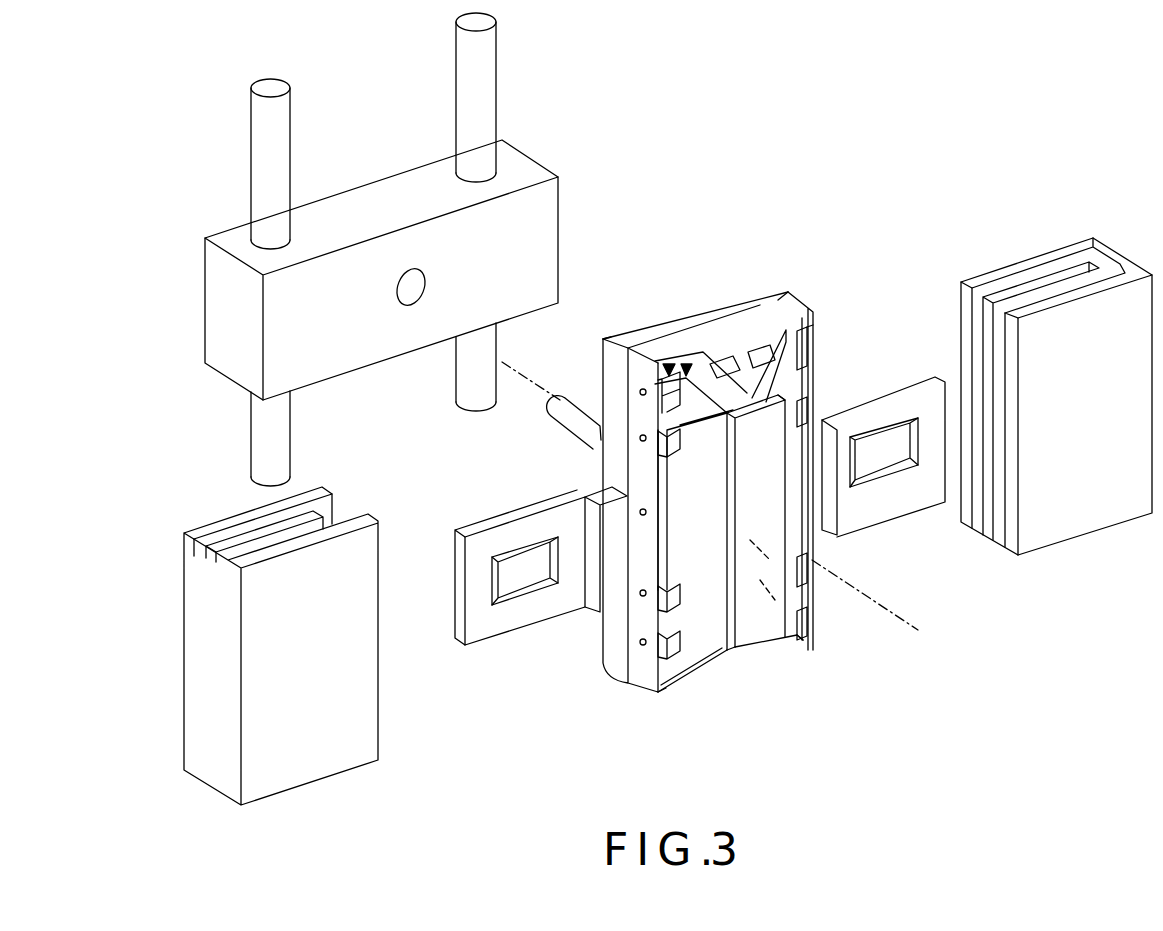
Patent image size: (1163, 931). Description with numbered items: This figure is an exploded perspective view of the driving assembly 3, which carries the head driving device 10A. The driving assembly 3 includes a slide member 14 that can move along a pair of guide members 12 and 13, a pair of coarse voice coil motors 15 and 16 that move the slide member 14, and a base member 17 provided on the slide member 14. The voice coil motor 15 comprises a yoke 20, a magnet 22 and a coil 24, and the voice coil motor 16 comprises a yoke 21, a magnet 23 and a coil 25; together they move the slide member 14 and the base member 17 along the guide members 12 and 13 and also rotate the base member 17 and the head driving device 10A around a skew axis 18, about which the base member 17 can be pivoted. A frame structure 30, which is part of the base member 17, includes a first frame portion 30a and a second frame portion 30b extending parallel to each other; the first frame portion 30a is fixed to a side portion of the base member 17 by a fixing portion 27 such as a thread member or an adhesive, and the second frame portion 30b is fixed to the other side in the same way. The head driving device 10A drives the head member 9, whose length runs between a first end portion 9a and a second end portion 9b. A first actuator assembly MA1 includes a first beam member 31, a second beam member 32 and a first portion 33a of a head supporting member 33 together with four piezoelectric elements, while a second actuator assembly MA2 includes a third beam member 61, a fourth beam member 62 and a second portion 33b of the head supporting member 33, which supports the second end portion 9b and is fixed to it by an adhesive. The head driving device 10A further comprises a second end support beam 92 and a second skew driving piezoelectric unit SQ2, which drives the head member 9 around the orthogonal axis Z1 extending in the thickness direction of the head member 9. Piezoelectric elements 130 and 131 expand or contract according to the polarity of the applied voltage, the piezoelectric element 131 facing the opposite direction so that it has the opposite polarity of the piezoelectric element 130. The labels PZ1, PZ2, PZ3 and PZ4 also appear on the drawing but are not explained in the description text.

The driving assembly 3 is at (1048, 140).
The head member 9 is at (750, 535).
The first end portion 9a is at (742, 662).
The second end portion 9b is at (812, 405).
The head driving device 10A is at (727, 479).
The guide member 12 is at (250, 150).
The guide member 13 is at (500, 82).
The slide member 14 is at (540, 240).
The coarse voice coil motor 15 is at (506, 680).
The coarse voice coil motor 16 is at (970, 575).
The base member 17 is at (600, 386).
The skew axis 18 is at (575, 426).
The yoke 20 is at (330, 765).
The yoke 21 is at (1088, 520).
The magnet 22 is at (243, 533).
The magnet 23 is at (1030, 287).
The coil 24 is at (520, 615).
The coil 25 is at (888, 497).
The fixing portion 27 is at (638, 395).
The frame structure 30 is at (664, 530).
The first frame portion 30a is at (607, 590).
The second frame portion 30b is at (812, 530).
The first beam member 31 is at (700, 650).
The second beam member 32 is at (812, 603).
The head supporting member 33 is at (766, 640).
The first portion of head supporting member 33a is at (738, 596).
The second portion of head supporting member 33b is at (712, 478).
The third beam member 61 is at (702, 437).
The fourth beam member 62 is at (810, 372).
The second end support beam 92 is at (736, 350).
The piezoelectric element 130 is at (687, 364).
The piezoelectric element 131 is at (758, 340).
The first actuator assembly MA1 is at (748, 665).
The second actuator assembly MA2 is at (668, 364).
The first piezoelectric element PZ1 is at (675, 668).
The second piezoelectric element PZ2 is at (802, 657).
The third piezoelectric element PZ3 is at (628, 338).
The fourth piezoelectric element PZ4 is at (825, 343).
The second skew driving piezoelectric unit SQ2 is at (790, 320).
The orthogonal axis Z1 is at (870, 596).